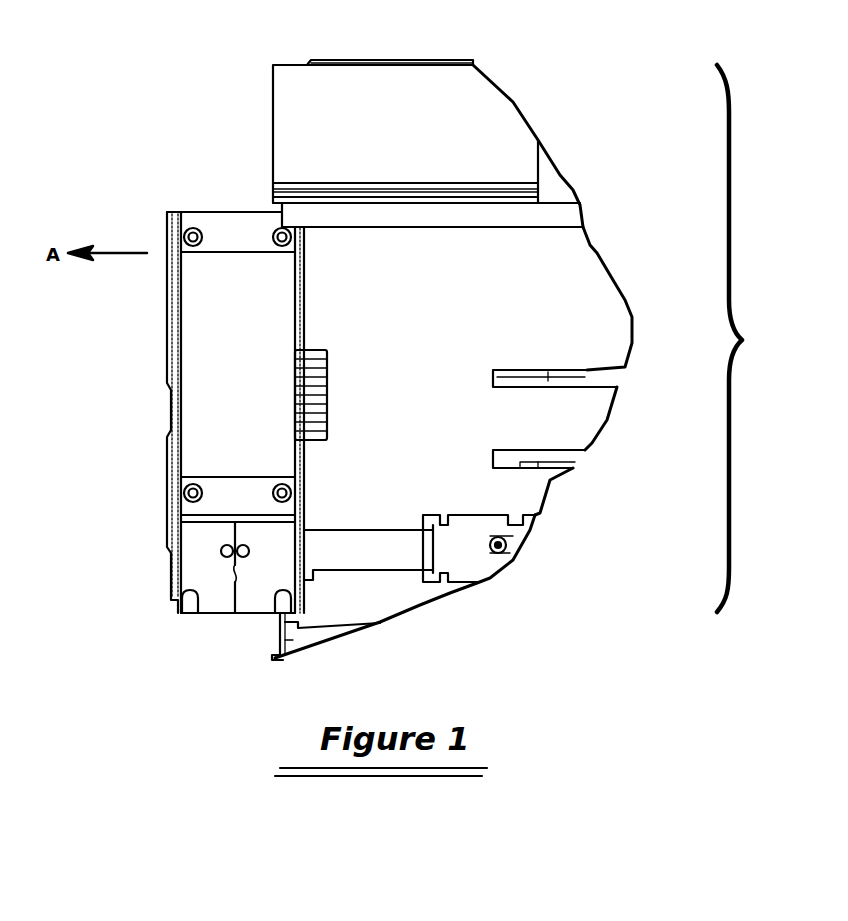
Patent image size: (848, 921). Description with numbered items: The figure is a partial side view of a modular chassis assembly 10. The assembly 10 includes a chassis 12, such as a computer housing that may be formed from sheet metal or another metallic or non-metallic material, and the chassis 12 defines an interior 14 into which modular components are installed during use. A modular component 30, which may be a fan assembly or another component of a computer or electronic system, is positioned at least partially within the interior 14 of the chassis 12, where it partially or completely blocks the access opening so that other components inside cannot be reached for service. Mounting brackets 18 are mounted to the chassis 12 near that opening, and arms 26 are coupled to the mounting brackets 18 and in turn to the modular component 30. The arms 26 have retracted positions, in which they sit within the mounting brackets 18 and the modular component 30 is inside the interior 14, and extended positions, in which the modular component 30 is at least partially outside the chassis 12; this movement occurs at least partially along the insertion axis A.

The modular chassis assembly 10 is at (749, 338).
The chassis 12 is at (482, 125).
The interior 14 is at (512, 290).
The mounting brackets 18 is at (468, 557).
The arms 26 is at (378, 548).
The modular component 30 is at (200, 568).